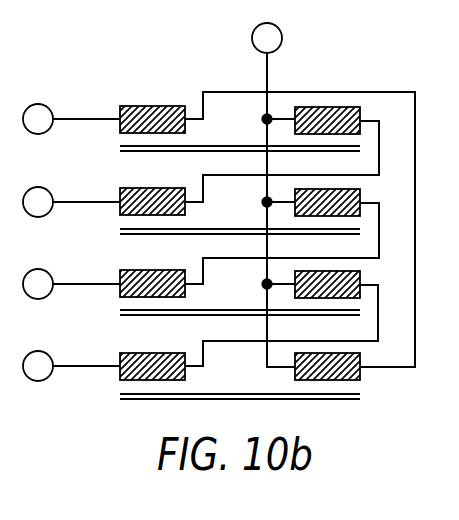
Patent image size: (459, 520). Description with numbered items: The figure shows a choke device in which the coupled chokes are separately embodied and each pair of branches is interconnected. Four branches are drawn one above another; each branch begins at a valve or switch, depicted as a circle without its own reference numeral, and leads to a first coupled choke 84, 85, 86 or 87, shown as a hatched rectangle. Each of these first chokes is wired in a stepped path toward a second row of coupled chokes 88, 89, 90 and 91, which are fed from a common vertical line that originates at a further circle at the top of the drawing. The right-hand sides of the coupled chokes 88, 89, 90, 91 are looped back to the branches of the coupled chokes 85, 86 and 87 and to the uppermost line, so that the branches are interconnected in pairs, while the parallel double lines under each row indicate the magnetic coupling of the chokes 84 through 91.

The coupled choke 84 is at (123, 106).
The coupled choke 85 is at (123, 188).
The coupled choke 86 is at (123, 270).
The coupled choke 87 is at (123, 353).
The coupled choke 88 is at (361, 112).
The coupled choke 89 is at (361, 194).
The coupled choke 90 is at (361, 276).
The coupled choke 91 is at (361, 358).